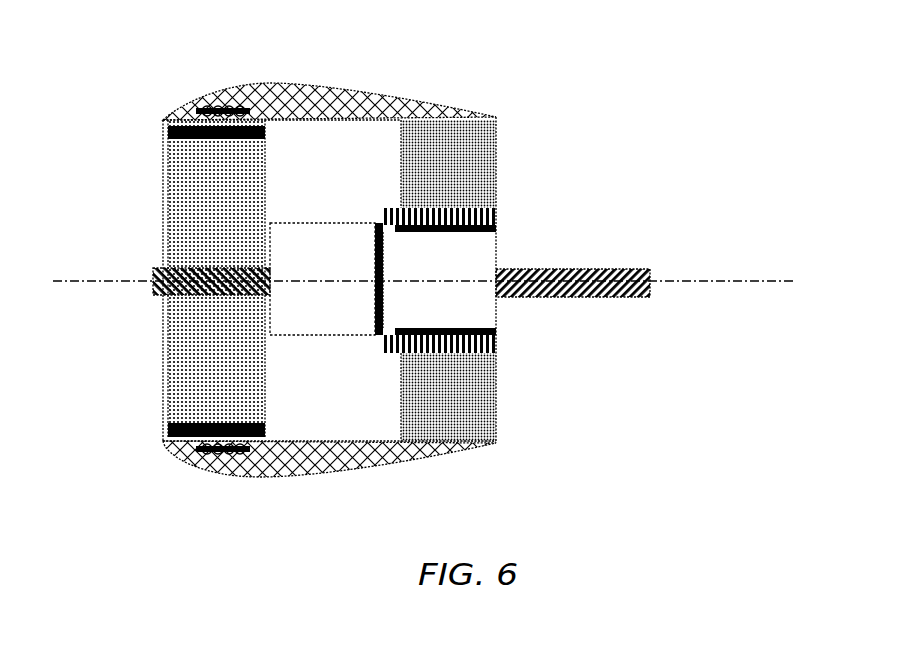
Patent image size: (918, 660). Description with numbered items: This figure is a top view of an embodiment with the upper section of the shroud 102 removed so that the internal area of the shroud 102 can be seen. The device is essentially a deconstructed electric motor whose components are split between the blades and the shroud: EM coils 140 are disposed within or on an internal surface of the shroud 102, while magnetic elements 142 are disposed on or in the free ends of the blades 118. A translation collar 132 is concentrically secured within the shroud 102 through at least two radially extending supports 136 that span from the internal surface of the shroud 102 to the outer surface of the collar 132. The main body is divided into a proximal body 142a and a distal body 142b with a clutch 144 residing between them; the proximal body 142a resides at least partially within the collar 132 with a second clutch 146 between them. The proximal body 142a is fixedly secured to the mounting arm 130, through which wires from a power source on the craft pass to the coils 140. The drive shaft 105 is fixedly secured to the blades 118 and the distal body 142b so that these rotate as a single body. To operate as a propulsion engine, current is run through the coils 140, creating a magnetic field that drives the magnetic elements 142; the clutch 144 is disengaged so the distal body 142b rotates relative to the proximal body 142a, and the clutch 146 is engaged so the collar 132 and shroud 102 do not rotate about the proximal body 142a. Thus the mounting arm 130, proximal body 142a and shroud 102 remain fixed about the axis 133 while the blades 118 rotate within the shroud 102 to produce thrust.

The shroud 102 is at (343, 90).
The drive shaft 105 is at (155, 293).
The blades 118 is at (178, 222).
The mounting arm 130 is at (631, 268).
The translation collar 132 is at (451, 291).
The axis 133 is at (782, 281).
The radially extending supports 136 is at (485, 172).
The EM coils 140 is at (207, 103).
The magnetic elements 142 is at (163, 133).
The proximal body 142a is at (418, 267).
The distal body 142b is at (297, 270).
The clutch 144 is at (380, 335).
The clutch 146 is at (498, 232).